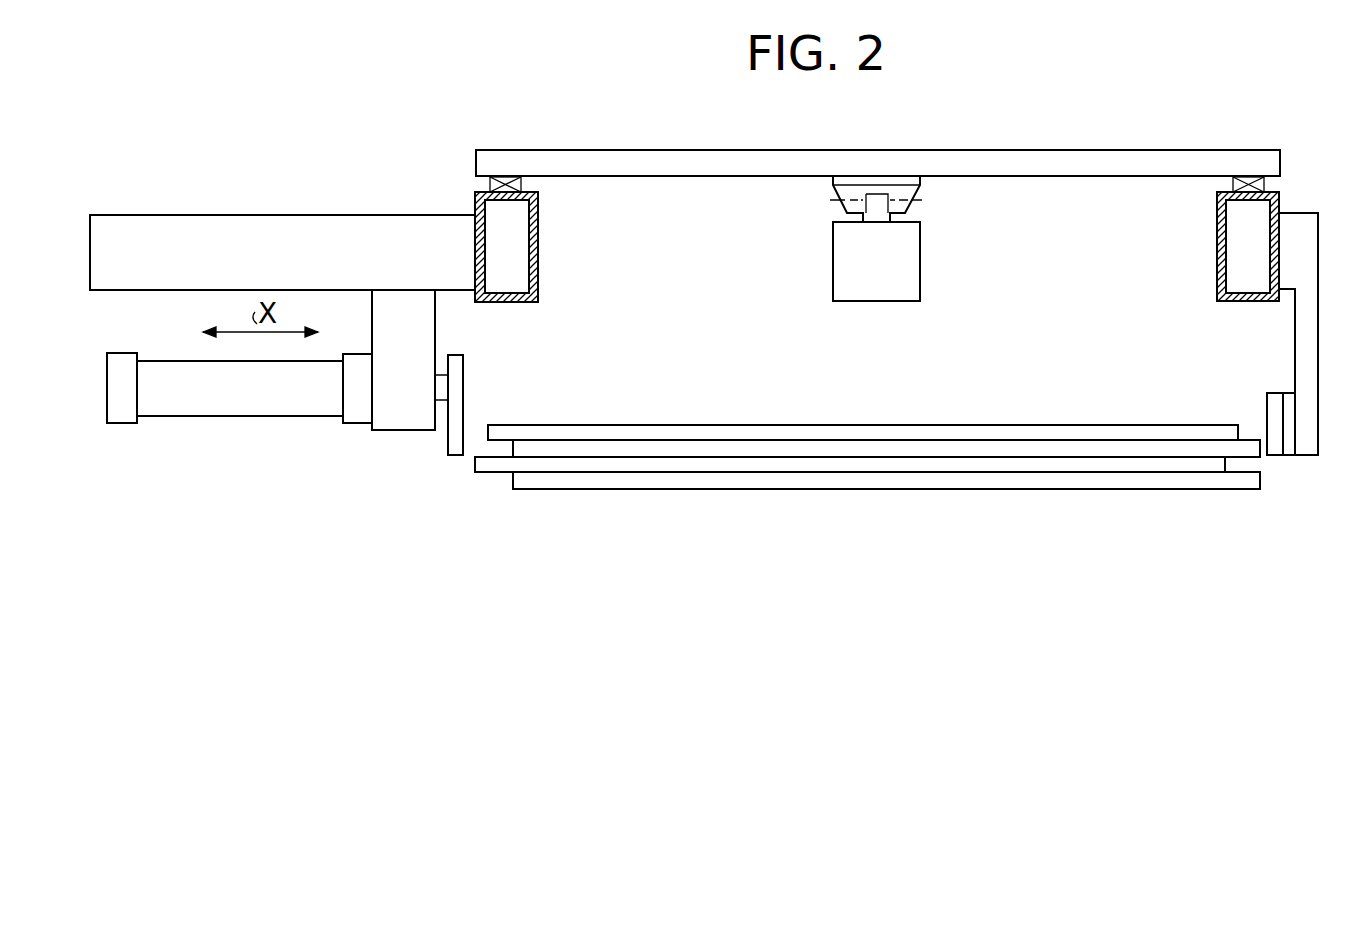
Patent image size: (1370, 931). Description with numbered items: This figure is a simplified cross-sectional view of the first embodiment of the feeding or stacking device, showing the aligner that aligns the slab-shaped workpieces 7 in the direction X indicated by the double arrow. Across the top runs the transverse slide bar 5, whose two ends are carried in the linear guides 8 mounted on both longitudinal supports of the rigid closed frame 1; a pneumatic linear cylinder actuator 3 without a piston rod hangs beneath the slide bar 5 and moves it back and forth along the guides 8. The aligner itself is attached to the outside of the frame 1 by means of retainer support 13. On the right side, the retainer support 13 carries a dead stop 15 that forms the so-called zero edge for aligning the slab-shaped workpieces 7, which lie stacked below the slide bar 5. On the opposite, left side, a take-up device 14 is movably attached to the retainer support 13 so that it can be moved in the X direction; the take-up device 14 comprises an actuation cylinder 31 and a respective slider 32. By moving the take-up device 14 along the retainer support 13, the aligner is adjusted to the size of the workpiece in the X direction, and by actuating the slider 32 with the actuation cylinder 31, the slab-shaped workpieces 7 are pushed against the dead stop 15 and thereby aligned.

The frame 1 is at (539, 240).
The linear cylinder actuator 3 is at (906, 253).
The slide bar 5 is at (995, 165).
The slab-shaped workpieces 7 is at (930, 432).
The linear guides 8 is at (505, 178).
The retainer support 13 is at (304, 243).
The take-up device 14 is at (396, 412).
The dead stop 15 is at (1297, 431).
The actuation cylinder 31 is at (224, 400).
The slider 32 is at (456, 448).